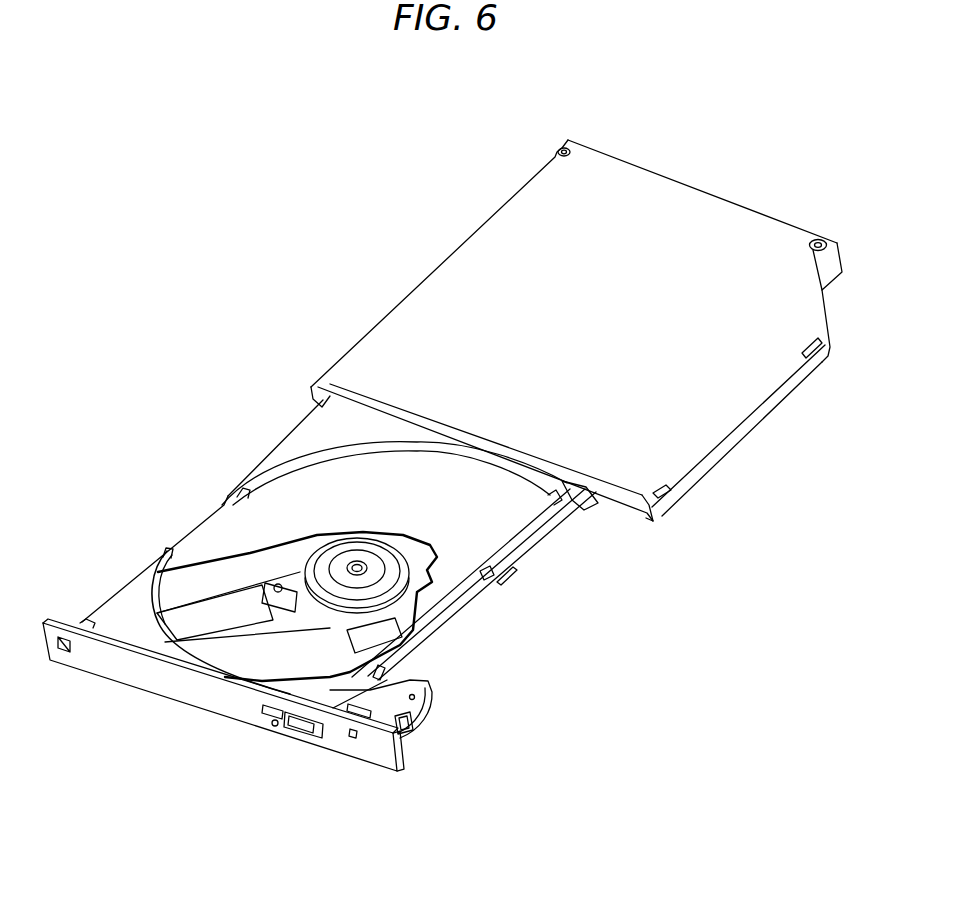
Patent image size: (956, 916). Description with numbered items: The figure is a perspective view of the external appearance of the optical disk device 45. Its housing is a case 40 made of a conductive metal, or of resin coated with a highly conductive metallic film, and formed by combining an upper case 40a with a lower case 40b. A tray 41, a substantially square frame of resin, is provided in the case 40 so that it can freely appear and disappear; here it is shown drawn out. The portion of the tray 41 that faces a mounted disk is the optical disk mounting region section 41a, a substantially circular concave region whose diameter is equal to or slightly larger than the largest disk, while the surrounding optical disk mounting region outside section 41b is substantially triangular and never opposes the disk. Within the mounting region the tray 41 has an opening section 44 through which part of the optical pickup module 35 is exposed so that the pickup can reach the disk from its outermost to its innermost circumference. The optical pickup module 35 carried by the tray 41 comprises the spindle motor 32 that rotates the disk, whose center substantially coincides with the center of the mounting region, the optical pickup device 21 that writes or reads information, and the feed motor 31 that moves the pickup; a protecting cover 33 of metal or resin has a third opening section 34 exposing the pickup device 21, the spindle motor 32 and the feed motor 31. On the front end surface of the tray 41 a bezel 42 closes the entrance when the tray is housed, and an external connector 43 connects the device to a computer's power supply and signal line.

The optical pickup device 21 is at (258, 612).
The feed motor 31 is at (430, 690).
The spindle motor 32 is at (367, 573).
The protecting cover 33 is at (297, 633).
The third opening section 34 is at (213, 612).
The optical pickup module 35 is at (277, 572).
The case 40 is at (465, 280).
The upper case 40a is at (727, 400).
The lower case 40b is at (613, 503).
The tray 41 is at (305, 418).
The optical disk mounting region section 41a is at (515, 530).
The optical disk mounting region outside section 41b is at (133, 602).
The bezel 42 is at (140, 682).
The external connector 43 is at (625, 158).
The opening section 44 is at (398, 733).
The optical disk device 45 is at (250, 247).